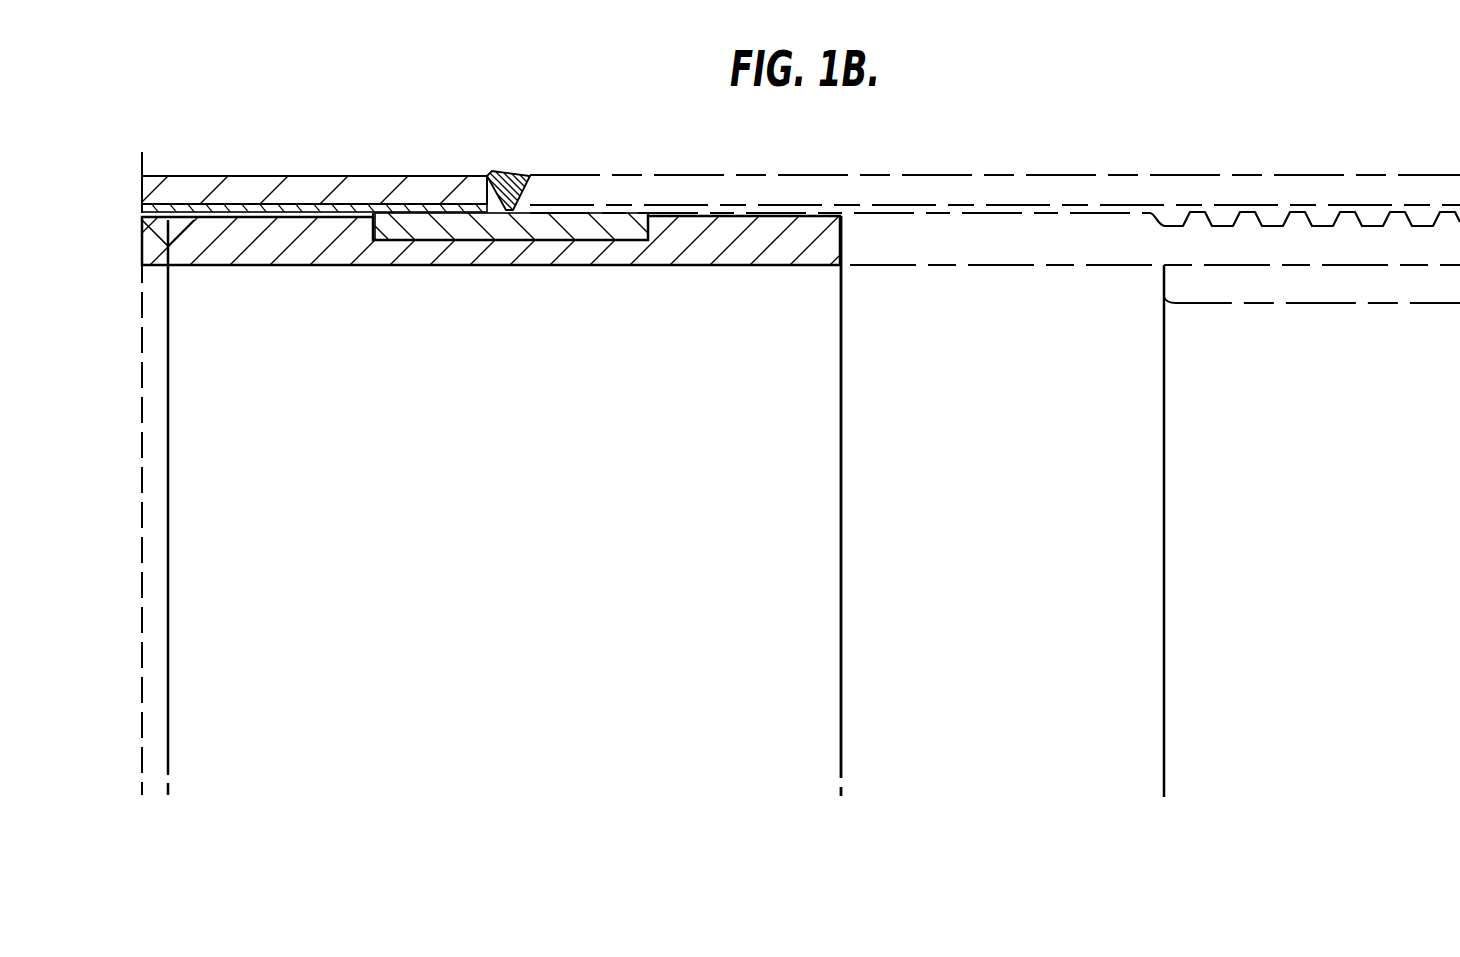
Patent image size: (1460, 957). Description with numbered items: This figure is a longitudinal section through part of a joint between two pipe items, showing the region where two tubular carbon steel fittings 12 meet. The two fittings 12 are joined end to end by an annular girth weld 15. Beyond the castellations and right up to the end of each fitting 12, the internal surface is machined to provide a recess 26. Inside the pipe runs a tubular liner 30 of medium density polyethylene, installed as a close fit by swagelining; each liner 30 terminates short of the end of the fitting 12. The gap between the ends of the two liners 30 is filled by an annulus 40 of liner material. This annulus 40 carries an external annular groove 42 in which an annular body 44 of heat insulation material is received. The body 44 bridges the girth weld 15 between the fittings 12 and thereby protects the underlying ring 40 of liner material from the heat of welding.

The tubular carbon steel fitting 12 is at (678, 188).
The annular girth weld 15 is at (512, 188).
The recess 26 is at (180, 210).
The tubular liner 30 is at (898, 250).
The annulus of liner material 40 is at (516, 435).
The external annular groove 42 is at (384, 247).
The annular body of heat insulation material 44 is at (577, 223).